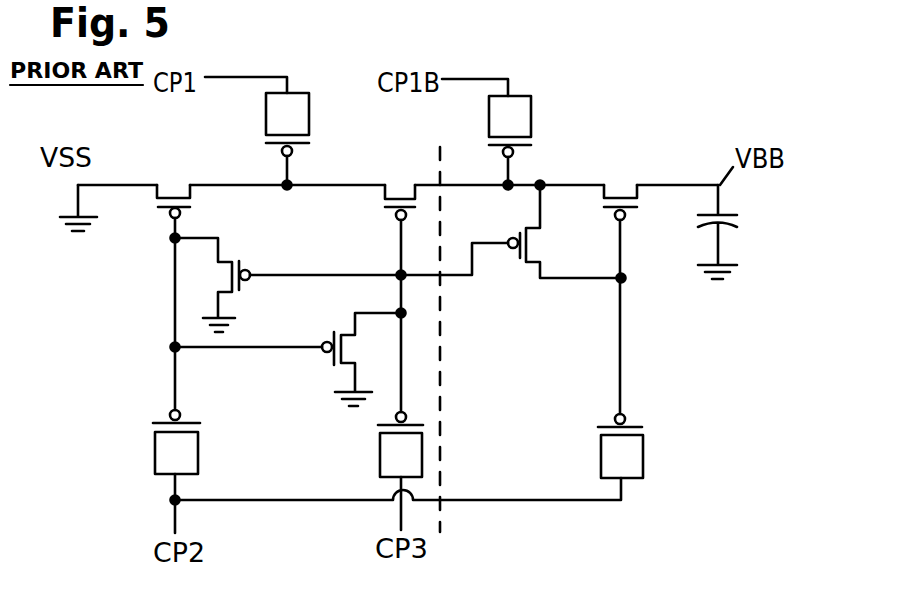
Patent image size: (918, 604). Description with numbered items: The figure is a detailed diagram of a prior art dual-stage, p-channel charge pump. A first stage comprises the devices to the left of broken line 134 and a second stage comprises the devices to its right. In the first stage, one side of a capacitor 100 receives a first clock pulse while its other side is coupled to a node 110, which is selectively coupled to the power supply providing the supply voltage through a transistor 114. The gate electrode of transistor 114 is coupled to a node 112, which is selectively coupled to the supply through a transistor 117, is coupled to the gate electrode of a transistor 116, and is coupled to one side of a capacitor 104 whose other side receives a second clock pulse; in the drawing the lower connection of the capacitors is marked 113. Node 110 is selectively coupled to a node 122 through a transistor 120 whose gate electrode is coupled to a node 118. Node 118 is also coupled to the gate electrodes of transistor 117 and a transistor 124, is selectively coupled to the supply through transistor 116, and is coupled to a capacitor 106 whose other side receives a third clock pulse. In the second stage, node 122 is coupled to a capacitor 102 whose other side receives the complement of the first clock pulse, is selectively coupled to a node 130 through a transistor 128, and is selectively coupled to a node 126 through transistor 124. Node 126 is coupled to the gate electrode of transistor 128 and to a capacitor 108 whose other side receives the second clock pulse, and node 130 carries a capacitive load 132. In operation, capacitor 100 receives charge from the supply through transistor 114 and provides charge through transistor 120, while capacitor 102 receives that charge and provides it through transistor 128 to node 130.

The capacitor 100 is at (310, 110).
The capacitor 102 is at (532, 117).
The capacitor 104 is at (198, 450).
The capacitor 106 is at (380, 452).
The capacitor 108 is at (575, 446).
The node 110 is at (288, 188).
The node 112 is at (172, 347).
The node 113 is at (172, 500).
The transistor 114 is at (178, 183).
The transistor 116 is at (350, 368).
The transistor 117 is at (231, 258).
The node 118 is at (402, 316).
The transistor 120 is at (398, 188).
The node 122 is at (509, 189).
The transistor 124 is at (533, 242).
The node 126 is at (621, 330).
The transistor 128 is at (615, 188).
The node 130 is at (693, 152).
The capacitive load 132 is at (697, 222).
The broken line 134 is at (468, 117).